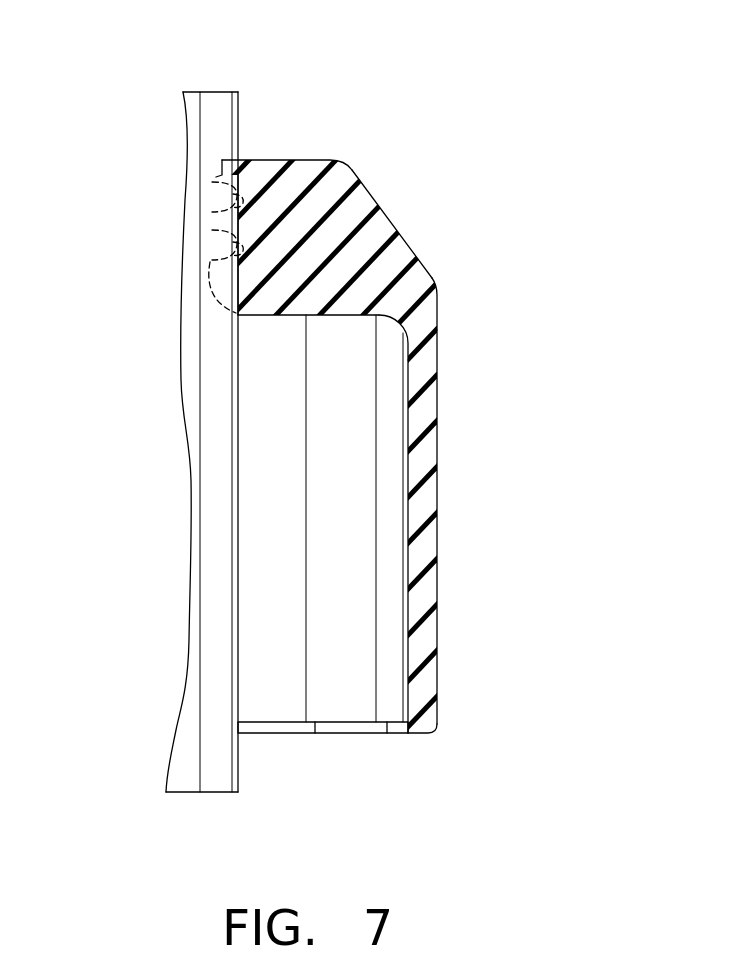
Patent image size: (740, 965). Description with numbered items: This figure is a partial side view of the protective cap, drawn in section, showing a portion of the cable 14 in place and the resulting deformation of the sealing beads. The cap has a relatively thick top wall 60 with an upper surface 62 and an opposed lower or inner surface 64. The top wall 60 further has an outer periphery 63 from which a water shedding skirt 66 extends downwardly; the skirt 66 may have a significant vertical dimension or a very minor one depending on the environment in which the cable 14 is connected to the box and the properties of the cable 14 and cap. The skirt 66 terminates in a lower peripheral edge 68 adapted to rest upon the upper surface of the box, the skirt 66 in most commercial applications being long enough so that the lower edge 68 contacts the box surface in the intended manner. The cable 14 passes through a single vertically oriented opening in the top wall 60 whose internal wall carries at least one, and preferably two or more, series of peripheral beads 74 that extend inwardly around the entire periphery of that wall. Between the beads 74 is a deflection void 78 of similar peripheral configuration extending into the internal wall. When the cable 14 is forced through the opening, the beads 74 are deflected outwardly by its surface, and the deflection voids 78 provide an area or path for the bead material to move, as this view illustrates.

The cable 14 is at (217, 543).
The top wall 60 is at (348, 208).
The upper surface 62 is at (318, 160).
The outer periphery 63 is at (437, 287).
The lower surface 64 is at (322, 317).
The water shedding skirt 66 is at (432, 482).
The lower peripheral edge 68 is at (423, 737).
The peripheral beads 74 is at (233, 228).
The deflection void 78 is at (277, 230).